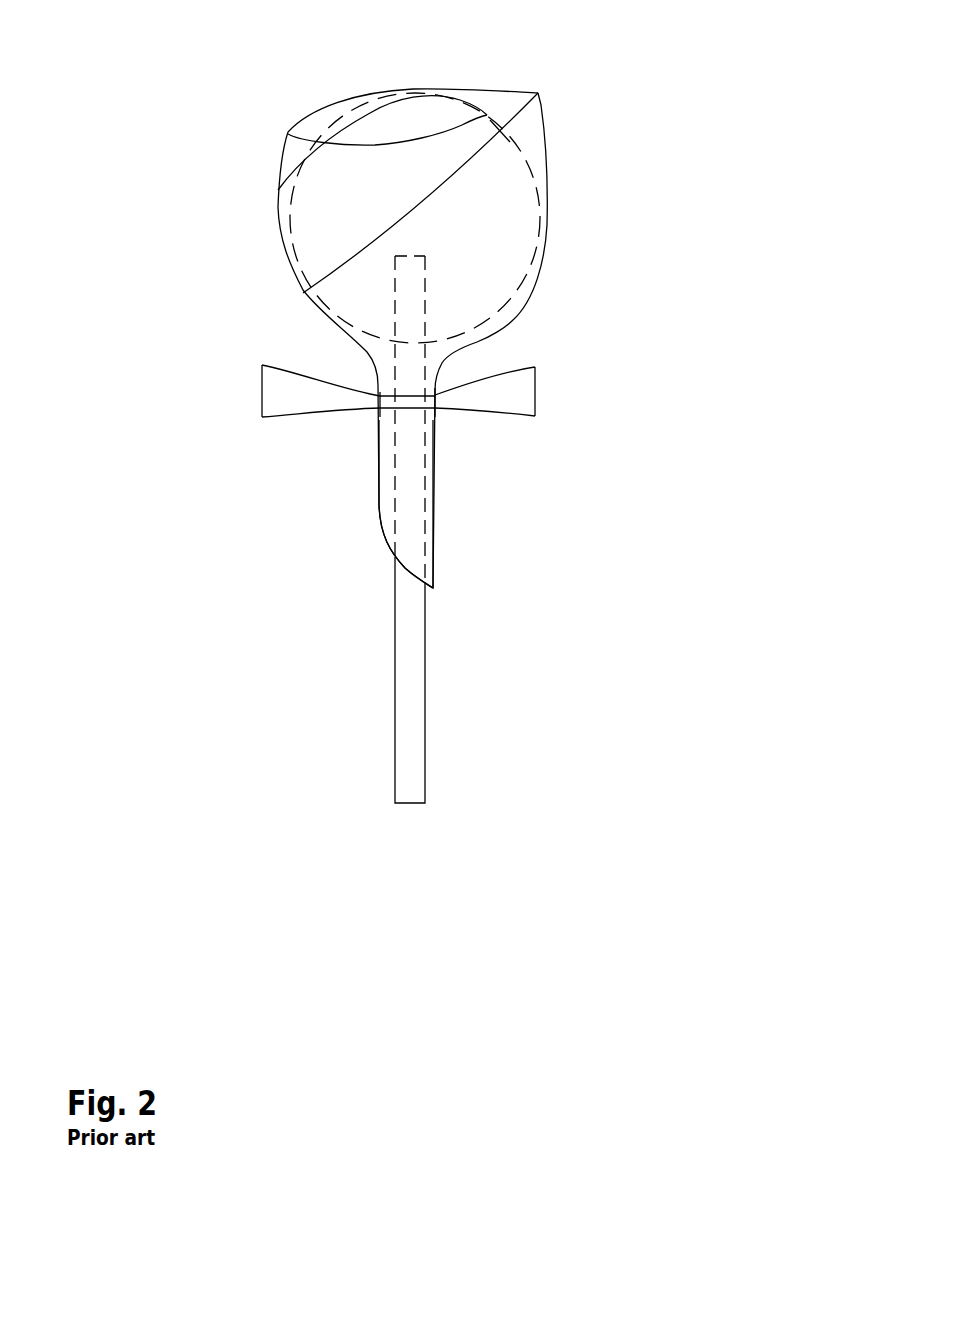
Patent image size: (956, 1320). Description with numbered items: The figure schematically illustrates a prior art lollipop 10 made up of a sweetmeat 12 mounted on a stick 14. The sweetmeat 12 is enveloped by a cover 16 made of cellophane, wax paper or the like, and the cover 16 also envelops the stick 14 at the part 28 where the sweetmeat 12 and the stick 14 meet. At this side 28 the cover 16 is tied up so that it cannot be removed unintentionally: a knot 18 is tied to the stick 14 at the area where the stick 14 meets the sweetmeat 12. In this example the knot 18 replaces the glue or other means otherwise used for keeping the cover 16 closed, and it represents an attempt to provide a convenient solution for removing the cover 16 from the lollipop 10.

The lollipop 10 is at (497, 446).
The sweetmeat 12 is at (360, 227).
The stick 14 is at (415, 645).
The cover 16 is at (508, 322).
The knot 18 is at (365, 407).
The part where the sweetmeat and the stick meet 28 is at (457, 448).